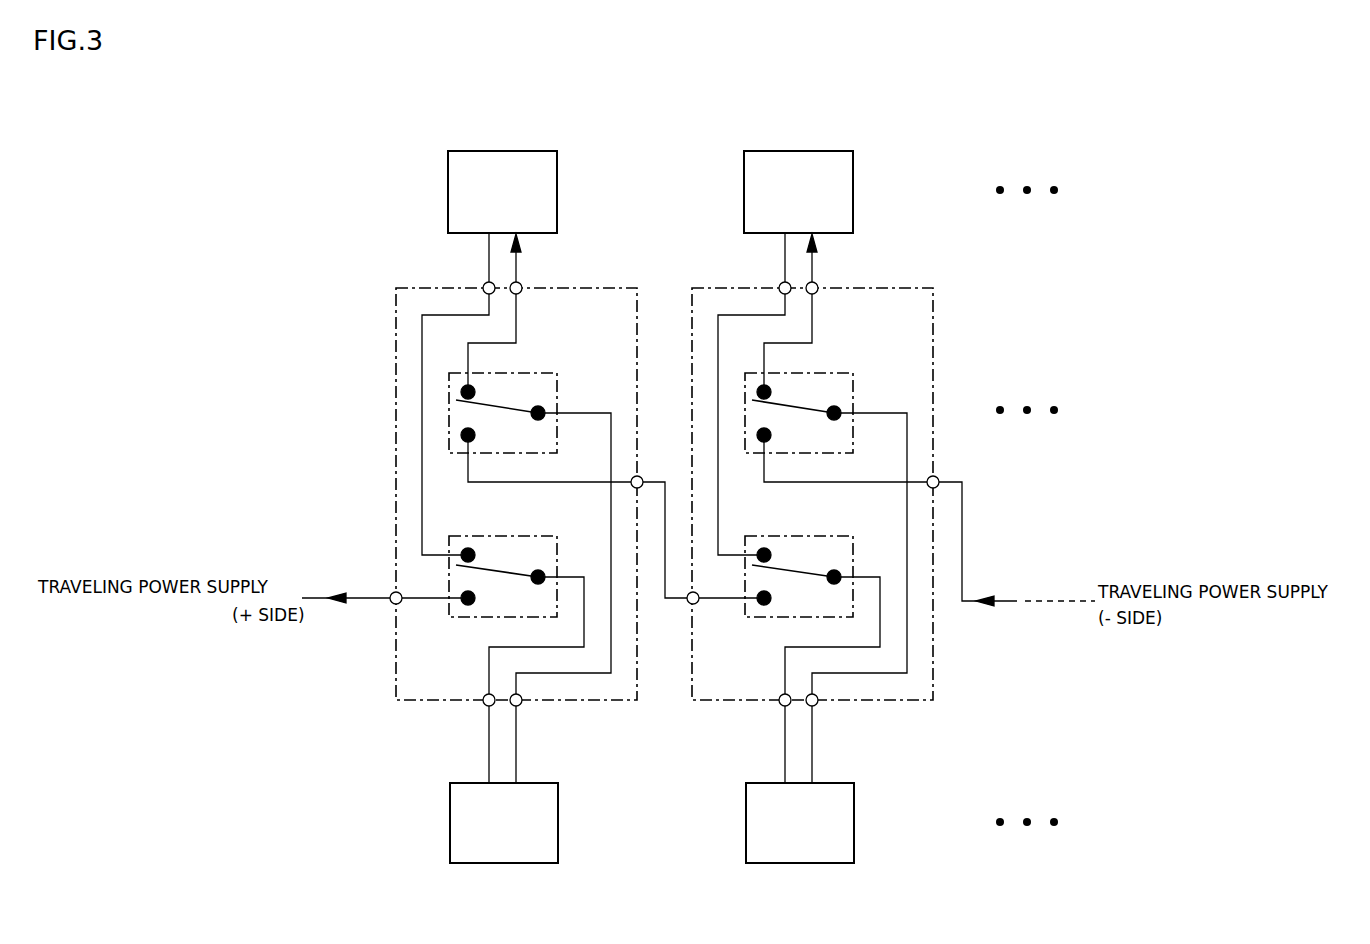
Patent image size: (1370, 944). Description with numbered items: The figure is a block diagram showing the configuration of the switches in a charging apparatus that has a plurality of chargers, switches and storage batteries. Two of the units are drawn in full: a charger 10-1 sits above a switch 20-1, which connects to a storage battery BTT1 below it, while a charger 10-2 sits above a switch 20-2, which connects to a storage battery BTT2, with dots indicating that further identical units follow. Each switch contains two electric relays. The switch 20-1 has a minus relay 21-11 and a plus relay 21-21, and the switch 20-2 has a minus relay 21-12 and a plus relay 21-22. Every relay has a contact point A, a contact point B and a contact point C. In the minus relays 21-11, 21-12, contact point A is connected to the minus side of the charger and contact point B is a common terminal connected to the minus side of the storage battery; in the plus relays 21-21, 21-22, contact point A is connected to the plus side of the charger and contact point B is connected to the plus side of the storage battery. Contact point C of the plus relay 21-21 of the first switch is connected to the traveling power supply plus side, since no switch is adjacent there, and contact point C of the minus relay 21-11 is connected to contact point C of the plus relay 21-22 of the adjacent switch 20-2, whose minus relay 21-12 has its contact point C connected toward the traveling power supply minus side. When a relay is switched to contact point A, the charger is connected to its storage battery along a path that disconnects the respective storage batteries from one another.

The charger 10-1 is at (521, 151).
The charger 10-2 is at (817, 151).
The switch 20-1 is at (494, 469).
The switch 20-2 is at (891, 469).
The minus relay 21-11 is at (518, 372).
The minus relay 21-12 is at (814, 372).
The plus relay 21-21 is at (467, 535).
The plus relay 21-22 is at (813, 535).
The storage battery BTT1 is at (532, 782).
The storage battery BTT2 is at (828, 782).